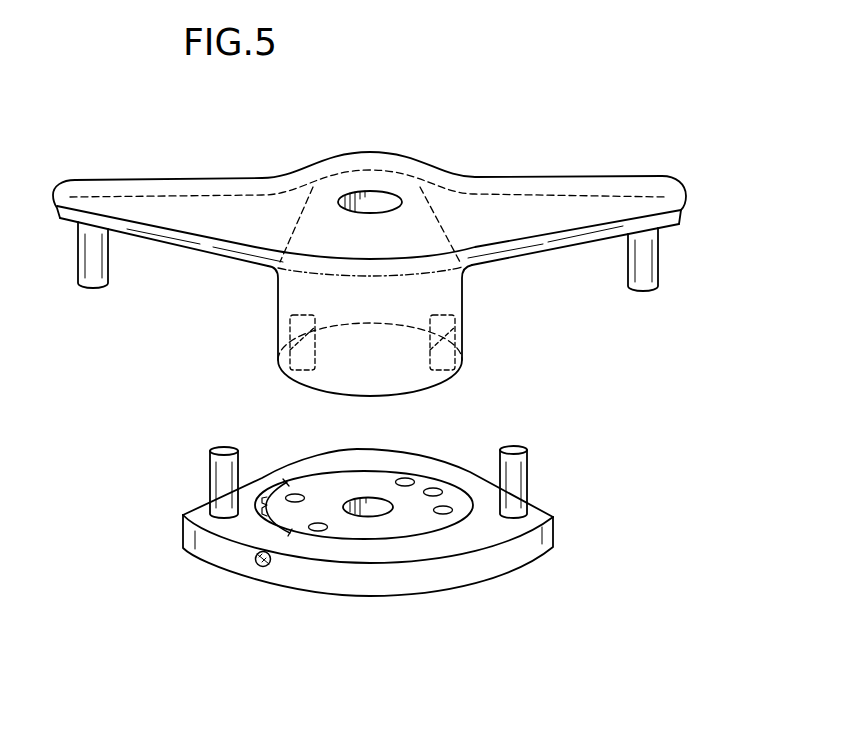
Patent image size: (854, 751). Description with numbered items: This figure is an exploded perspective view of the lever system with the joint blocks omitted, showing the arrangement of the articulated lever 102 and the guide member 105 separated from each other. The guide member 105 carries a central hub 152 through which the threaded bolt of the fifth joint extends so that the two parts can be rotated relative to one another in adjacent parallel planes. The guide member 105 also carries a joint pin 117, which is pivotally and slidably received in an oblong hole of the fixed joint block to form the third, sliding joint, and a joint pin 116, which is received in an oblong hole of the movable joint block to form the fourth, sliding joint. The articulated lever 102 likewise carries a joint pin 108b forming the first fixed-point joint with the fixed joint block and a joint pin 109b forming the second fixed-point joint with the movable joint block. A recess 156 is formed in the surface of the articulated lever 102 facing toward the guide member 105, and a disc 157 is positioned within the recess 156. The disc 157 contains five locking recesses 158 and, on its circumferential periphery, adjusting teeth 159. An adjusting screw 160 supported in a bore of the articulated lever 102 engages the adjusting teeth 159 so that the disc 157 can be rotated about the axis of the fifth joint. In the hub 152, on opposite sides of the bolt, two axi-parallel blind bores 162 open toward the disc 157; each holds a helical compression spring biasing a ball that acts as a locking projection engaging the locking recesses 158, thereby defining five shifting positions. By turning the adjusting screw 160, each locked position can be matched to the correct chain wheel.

The guide member 105 is at (495, 180).
The hub 152 is at (433, 298).
The blind bores 162 is at (289, 333).
The joint pin 117 is at (91, 288).
The joint pin 116 is at (643, 291).
The articulated lever 102 is at (355, 578).
The joint pin 108b is at (209, 467).
The joint pin 109b is at (527, 460).
The recess 156 is at (463, 523).
The disc 157 is at (407, 525).
The locking recesses 158 is at (314, 524).
The adjusting teeth 159 is at (263, 498).
The adjusting screw 160 is at (262, 567).